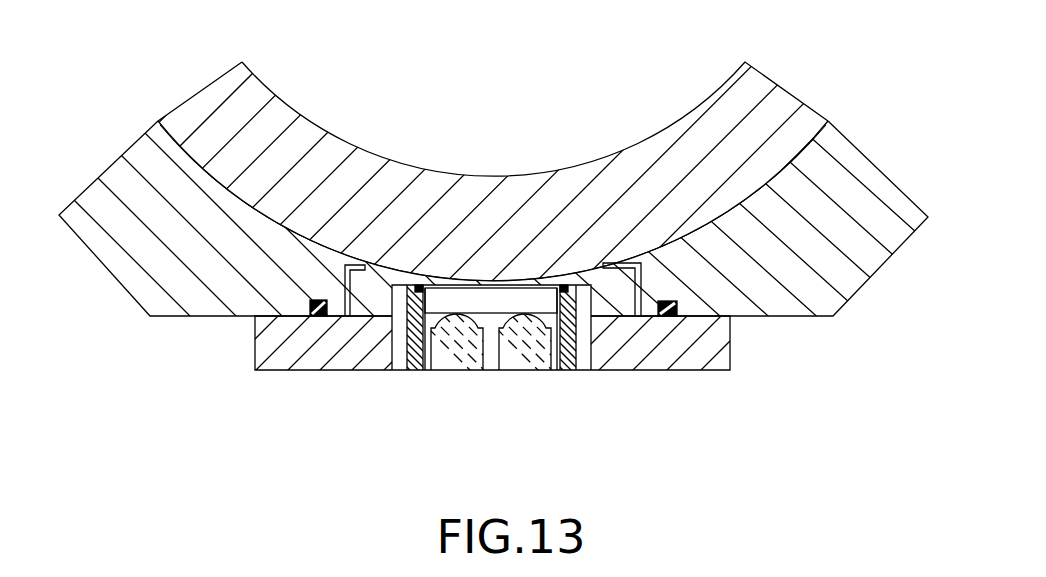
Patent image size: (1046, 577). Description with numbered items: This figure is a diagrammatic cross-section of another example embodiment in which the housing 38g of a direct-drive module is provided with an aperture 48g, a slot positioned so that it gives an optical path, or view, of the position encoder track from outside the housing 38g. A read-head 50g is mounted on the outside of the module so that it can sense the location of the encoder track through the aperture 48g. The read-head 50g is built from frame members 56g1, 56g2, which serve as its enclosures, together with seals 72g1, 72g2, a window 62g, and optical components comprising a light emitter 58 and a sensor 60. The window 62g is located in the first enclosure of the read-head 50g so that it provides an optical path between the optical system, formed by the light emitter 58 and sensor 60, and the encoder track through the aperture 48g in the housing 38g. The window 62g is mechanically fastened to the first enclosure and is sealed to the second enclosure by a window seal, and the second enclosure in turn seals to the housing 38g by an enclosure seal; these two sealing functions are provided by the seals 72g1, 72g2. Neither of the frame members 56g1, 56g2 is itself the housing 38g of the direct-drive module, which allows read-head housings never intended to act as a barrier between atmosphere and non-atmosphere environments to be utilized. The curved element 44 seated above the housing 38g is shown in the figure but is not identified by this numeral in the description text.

The housing 38g is at (122, 267).
The ring / bearing surface 44 is at (272, 122).
The aperture 48g is at (346, 268).
The read-head 50g is at (507, 264).
The frame member 56g1 is at (674, 372).
The frame member 56g2 is at (410, 372).
The light emitter 58 is at (529, 372).
The sensor 60 is at (452, 372).
The window 62g is at (497, 298).
The seal 72g1 is at (667, 300).
The seal 72g2 is at (563, 288).